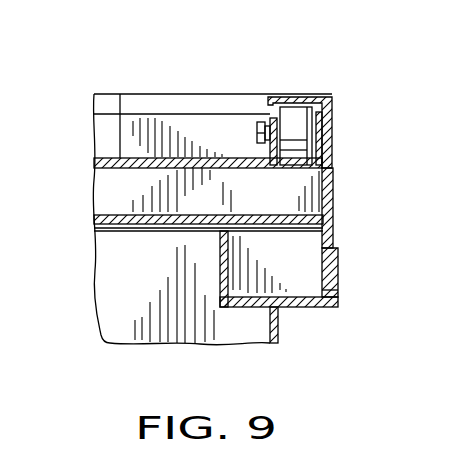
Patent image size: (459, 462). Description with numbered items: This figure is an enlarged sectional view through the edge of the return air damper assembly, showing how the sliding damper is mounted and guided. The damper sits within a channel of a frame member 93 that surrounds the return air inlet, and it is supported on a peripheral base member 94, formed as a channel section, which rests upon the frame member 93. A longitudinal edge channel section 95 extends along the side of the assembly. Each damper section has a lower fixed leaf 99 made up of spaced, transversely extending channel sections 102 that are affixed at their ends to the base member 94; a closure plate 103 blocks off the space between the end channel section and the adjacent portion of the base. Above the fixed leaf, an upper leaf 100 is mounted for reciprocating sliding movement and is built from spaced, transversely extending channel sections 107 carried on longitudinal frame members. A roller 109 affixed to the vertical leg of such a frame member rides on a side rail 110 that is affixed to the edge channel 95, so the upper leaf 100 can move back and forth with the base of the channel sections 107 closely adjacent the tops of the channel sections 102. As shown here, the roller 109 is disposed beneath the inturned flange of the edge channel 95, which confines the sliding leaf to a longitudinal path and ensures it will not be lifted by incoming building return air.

The frame member 93 is at (336, 291).
The peripheral base member 94 is at (334, 241).
The longitudinal edge channel section 95 is at (333, 108).
The lower fixed leaf 99 is at (335, 192).
The upper leaf 100 is at (189, 104).
The channel sections 102 is at (122, 215).
The closure plate 103 is at (145, 231).
The channel sections 107 is at (120, 94).
The roller 109 is at (293, 118).
The side rail 110 is at (302, 168).